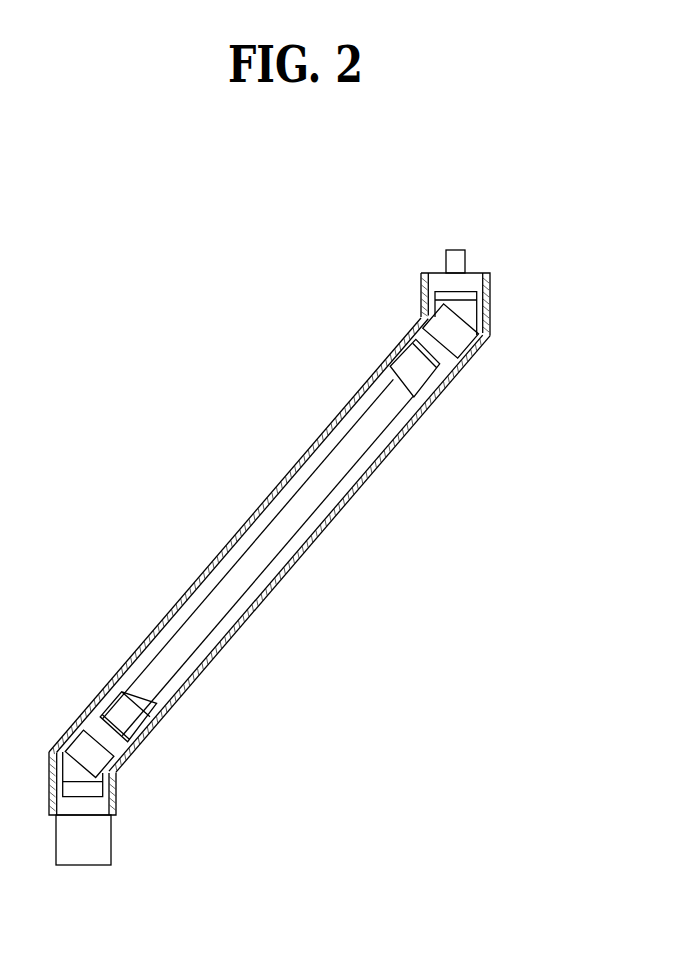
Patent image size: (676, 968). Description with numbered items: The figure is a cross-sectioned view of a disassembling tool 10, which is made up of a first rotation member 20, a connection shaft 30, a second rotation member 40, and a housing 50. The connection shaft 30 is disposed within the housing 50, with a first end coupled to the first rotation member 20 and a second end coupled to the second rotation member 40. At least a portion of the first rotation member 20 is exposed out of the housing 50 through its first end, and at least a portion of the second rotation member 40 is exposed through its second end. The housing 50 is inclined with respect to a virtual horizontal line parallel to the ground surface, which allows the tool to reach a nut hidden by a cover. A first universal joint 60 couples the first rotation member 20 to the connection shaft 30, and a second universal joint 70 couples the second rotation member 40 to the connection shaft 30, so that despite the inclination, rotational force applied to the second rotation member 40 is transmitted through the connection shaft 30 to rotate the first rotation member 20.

The disassembling tool 10 is at (127, 231).
The first rotation member 20 is at (111, 838).
The connection shaft 30 is at (223, 598).
The second rotation member 40 is at (465, 262).
The housing 50 is at (257, 505).
The first universal joint 60 is at (107, 750).
The second universal joint 70 is at (480, 311).